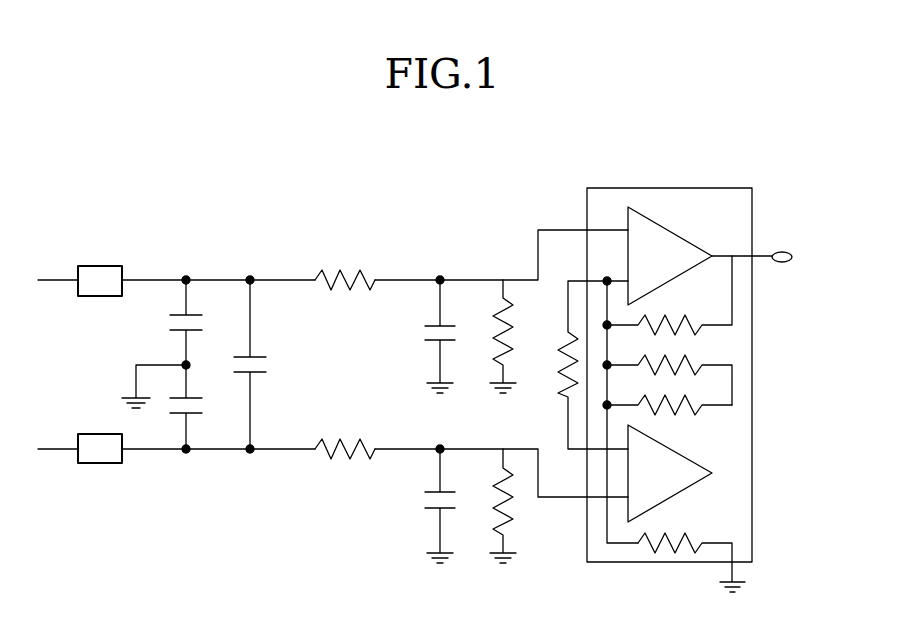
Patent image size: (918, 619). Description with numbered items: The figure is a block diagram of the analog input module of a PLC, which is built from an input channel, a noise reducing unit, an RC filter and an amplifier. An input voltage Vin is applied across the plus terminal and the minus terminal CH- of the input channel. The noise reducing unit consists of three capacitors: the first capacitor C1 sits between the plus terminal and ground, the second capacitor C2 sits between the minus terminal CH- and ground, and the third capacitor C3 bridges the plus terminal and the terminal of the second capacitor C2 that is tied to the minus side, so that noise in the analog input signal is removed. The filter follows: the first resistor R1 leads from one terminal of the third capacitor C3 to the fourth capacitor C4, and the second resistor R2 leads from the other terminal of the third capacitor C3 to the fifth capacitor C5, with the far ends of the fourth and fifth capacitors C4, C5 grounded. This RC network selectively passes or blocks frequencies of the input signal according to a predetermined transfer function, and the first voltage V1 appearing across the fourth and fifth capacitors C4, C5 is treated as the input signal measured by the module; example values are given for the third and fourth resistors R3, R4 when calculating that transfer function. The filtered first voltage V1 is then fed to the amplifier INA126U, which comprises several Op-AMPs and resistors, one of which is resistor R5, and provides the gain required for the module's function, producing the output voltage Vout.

The minus terminal CH- is at (100, 448).
The input voltage Vin is at (59, 364).
The first capacitor C1 is at (198, 322).
The second capacitor C2 is at (198, 407).
The third capacitor C3 is at (262, 364).
The fourth capacitor C4 is at (427, 336).
The fifth capacitor C5 is at (427, 506).
The first resistor R1 is at (345, 269).
The second resistor R2 is at (345, 438).
The third resistor R3 is at (493, 336).
The fourth resistor R4 is at (493, 506).
The gain-setting resistor R5 is at (581, 365).
The first voltage V1 is at (440, 352).
The amplifier INA126U is at (689, 364).
The output voltage Vout is at (773, 258).